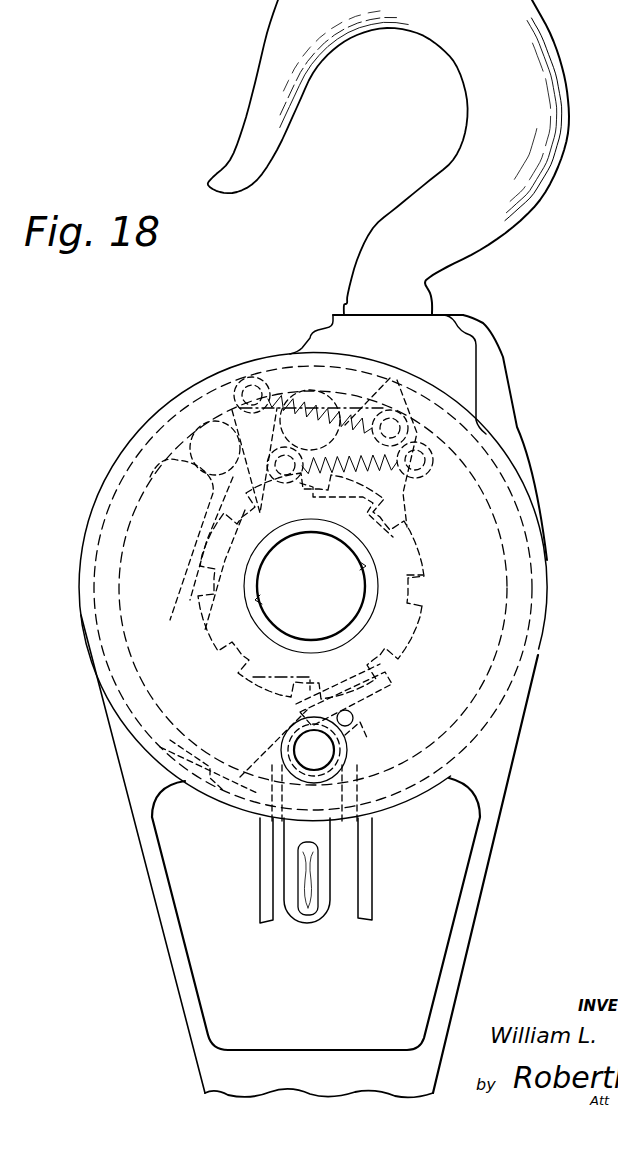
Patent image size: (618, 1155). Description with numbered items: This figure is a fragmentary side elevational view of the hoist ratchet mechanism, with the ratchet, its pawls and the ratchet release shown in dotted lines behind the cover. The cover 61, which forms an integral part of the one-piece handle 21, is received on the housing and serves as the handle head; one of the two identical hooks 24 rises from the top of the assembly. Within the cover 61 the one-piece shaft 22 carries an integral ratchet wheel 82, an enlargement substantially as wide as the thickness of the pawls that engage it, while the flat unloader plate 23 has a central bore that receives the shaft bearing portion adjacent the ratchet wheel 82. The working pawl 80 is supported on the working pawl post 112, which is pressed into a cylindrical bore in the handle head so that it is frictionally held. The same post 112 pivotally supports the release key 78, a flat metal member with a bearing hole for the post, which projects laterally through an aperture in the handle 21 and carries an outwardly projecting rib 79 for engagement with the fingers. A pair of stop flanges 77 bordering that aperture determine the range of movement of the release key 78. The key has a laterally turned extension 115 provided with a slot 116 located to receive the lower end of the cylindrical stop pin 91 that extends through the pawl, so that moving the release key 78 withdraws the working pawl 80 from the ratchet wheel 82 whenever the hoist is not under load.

The handle 21 is at (477, 907).
The shaft 22 is at (348, 556).
The unloader plate 23 is at (423, 627).
The hook 24 is at (427, 277).
The cover 61 is at (533, 684).
The stop flanges 77 is at (263, 915).
The release key 78 is at (327, 912).
The rib 79 is at (303, 862).
The working pawl 80 is at (390, 707).
The ratchet wheel 82 is at (407, 583).
The stop pin 91 is at (390, 703).
The working pawl post 112 is at (300, 748).
The laterally turned extension 115 is at (353, 752).
The slot 116 is at (353, 723).